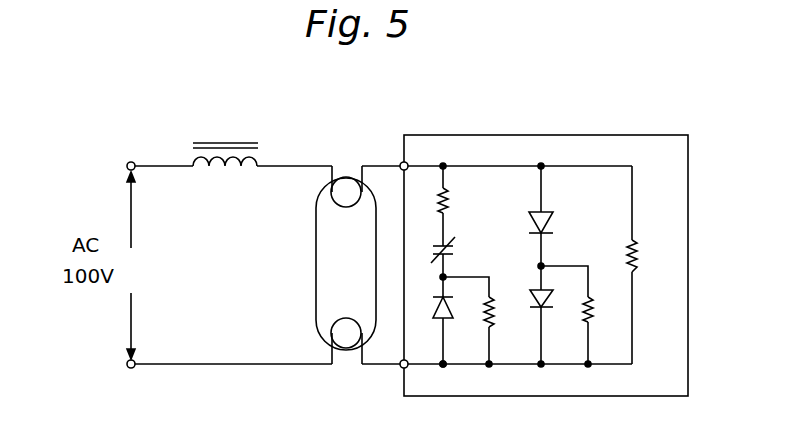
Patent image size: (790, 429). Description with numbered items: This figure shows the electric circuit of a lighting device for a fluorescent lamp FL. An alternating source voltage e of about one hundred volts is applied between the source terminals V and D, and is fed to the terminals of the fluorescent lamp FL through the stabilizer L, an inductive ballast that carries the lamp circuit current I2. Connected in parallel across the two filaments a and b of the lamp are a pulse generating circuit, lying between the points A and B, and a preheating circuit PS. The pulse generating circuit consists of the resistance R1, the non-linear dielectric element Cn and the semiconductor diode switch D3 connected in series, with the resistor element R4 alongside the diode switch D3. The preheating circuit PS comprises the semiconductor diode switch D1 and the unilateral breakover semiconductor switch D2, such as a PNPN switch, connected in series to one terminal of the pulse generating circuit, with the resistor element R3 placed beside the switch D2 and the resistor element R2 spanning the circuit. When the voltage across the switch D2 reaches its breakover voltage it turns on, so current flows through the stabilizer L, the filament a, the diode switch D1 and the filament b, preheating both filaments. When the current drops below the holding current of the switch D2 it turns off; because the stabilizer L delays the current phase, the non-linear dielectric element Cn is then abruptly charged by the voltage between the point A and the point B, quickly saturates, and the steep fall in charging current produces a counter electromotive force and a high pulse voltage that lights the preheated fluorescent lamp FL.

The source voltage terminal V is at (158, 152).
The source voltage terminal D is at (227, 382).
The source voltage e is at (130, 265).
The stabilizer L is at (260, 160).
The lamp circuit current I2 is at (291, 157).
The fluorescent lamp FL is at (327, 295).
The filament a is at (336, 199).
The filament b is at (346, 350).
The point A is at (442, 155).
The point B is at (442, 378).
The resistance R1 is at (459, 206).
The non-linear dielectric element Cn is at (459, 258).
The semiconductor diode switch D3 is at (454, 322).
The resistor element R4 is at (482, 322).
The semiconductor diode switch D1 is at (558, 216).
The preheating circuit PS is at (558, 205).
The unilateral breakover semiconductor switch D2 is at (532, 314).
The resistor element R3 is at (581, 316).
The resistor element R2 is at (649, 265).